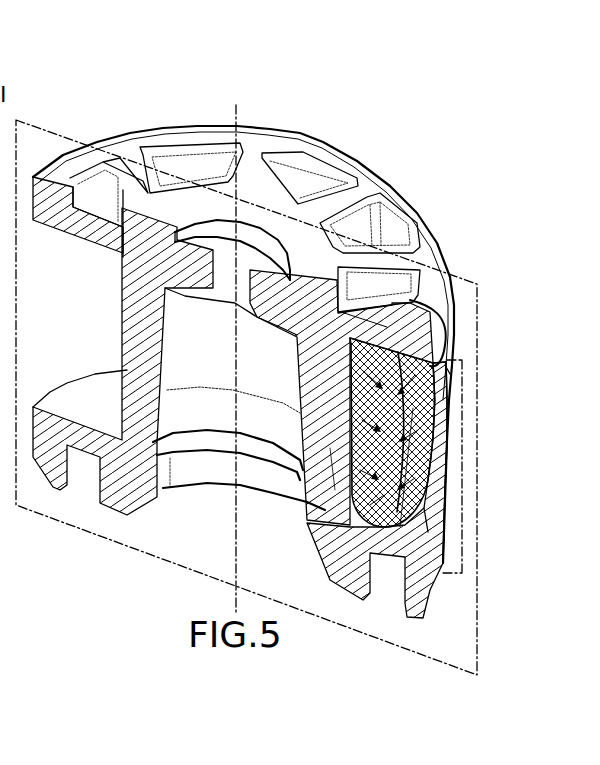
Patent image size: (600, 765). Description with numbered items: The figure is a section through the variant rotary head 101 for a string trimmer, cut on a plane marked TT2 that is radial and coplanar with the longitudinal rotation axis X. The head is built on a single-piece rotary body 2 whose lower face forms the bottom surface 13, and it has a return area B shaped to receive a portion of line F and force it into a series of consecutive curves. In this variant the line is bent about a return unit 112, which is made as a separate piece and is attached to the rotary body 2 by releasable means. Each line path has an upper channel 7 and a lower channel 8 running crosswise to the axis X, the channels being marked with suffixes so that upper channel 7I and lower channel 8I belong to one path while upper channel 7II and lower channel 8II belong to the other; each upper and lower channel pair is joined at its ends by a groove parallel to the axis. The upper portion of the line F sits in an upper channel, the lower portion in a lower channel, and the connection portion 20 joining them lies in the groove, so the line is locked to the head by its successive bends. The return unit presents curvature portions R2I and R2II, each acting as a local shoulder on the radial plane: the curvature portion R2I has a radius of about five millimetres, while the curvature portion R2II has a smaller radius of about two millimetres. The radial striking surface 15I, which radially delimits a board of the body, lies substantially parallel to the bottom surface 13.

The rotary head 101 is at (360, 130).
The rotary body 2 is at (28, 193).
The bottom surface 13 is at (114, 340).
The longitudinal rotation axis X is at (235, 105).
The section plane TT2 is at (467, 310).
The return area B is at (450, 374).
The upper channel 7 is at (259, 308).
The upper channel 7I is at (345, 353).
The upper channel 7II is at (344, 392).
The lower channel 8 is at (250, 479).
The lower channel 8I is at (322, 533).
The lower channel 8II is at (340, 517).
The connection portion 20 is at (474, 441).
The radial striking surface 15I is at (445, 380).
The return unit 112 is at (447, 458).
The line F is at (445, 533).
The curvature portion R2I is at (330, 448).
The curvature portion R2II is at (413, 408).